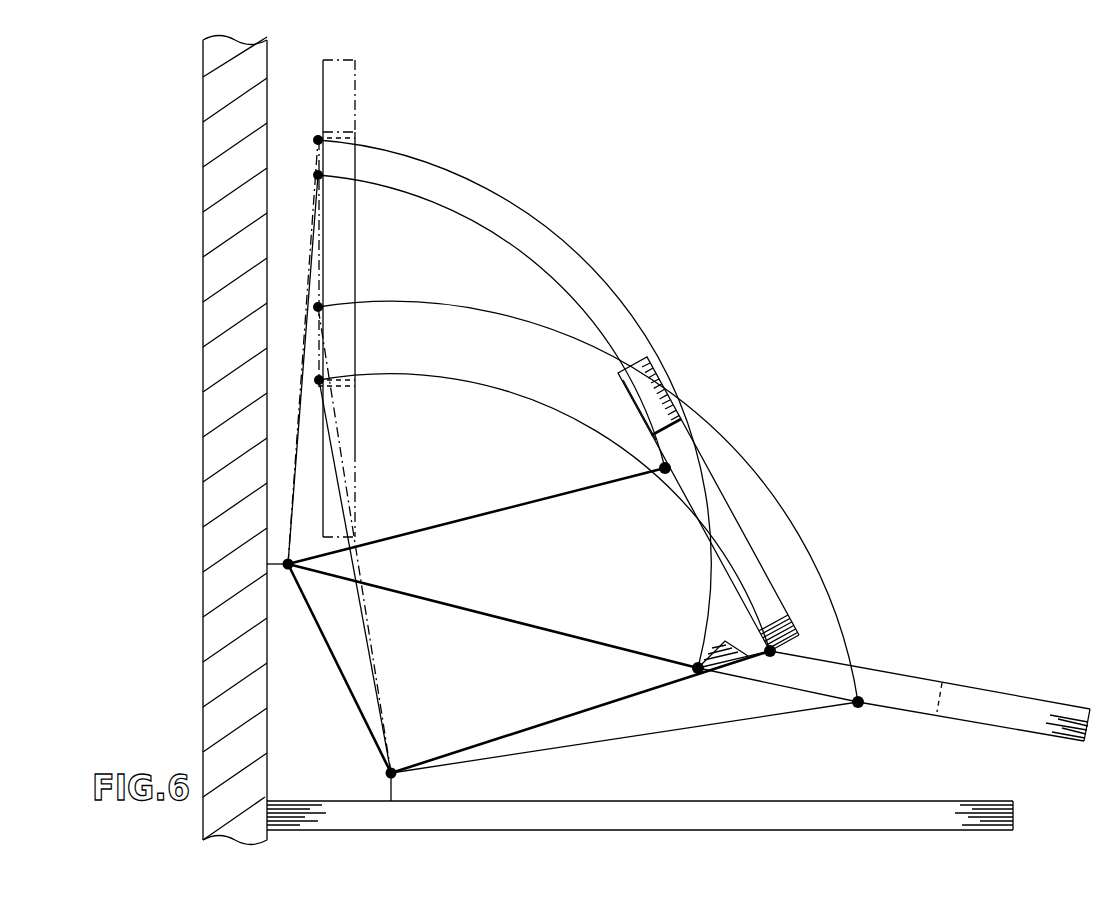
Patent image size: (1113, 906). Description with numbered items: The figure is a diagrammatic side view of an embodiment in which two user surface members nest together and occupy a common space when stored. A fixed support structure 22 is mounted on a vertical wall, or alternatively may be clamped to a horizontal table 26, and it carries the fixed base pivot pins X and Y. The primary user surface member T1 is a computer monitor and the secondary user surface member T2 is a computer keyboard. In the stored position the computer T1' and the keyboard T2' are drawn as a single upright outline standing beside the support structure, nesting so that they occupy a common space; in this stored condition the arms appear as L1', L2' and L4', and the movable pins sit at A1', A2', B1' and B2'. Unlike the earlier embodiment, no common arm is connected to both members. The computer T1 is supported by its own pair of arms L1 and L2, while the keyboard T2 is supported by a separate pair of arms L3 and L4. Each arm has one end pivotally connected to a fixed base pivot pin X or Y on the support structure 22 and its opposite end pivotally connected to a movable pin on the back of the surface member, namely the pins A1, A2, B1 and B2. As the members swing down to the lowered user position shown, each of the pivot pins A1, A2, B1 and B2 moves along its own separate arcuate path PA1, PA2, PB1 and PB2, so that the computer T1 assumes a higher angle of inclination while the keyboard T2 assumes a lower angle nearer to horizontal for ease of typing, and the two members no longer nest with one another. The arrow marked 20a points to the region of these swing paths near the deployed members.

The fixed support structure 22 is at (290, 647).
The horizontal table 26 is at (906, 801).
The door panel path 20a is at (783, 477).
The primary user surface member T1 is at (708, 501).
The secondary user surface member T2 is at (894, 695).
The computer in stored position T1' is at (370, 298).
The keyboard in stored position T2' is at (368, 334).
The arm L1 is at (580, 712).
The arm L2 is at (476, 516).
The arm L3 is at (723, 723).
The arm L4 is at (493, 616).
The first link in closed position L1' is at (380, 576).
The second link in closed position L2' is at (367, 456).
The fourth link in closed position L4' is at (298, 352).
The fixed base pivot pin X is at (393, 765).
The fixed base pivot pin Y is at (296, 570).
The pivot pin A1 is at (825, 618).
The pivot pin A2 is at (864, 720).
The pivot pin B1 is at (641, 494).
The pivot pin B2 is at (700, 645).
The pivot A1 in closed position A1' is at (364, 360).
The pivot A2 in closed position A2' is at (366, 287).
The pivot B1 in closed position B1' is at (300, 169).
The pivot B2 in closed position B2' is at (301, 122).
The arcuate path PA1 is at (520, 394).
The arcuate path PA2 is at (498, 311).
The arcuate path PB1 is at (480, 226).
The arcuate path PB2 is at (580, 259).